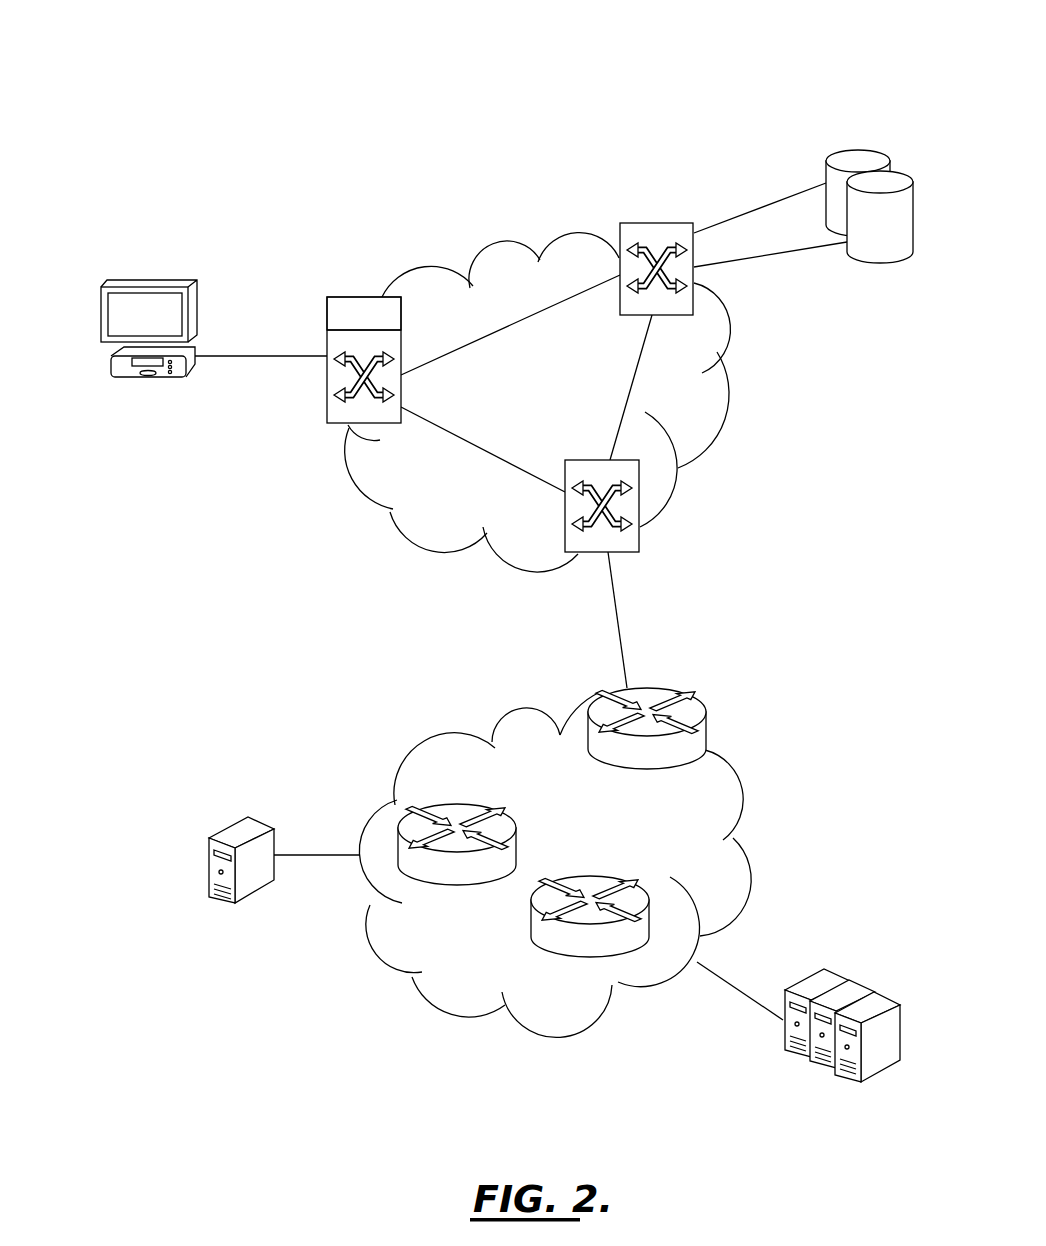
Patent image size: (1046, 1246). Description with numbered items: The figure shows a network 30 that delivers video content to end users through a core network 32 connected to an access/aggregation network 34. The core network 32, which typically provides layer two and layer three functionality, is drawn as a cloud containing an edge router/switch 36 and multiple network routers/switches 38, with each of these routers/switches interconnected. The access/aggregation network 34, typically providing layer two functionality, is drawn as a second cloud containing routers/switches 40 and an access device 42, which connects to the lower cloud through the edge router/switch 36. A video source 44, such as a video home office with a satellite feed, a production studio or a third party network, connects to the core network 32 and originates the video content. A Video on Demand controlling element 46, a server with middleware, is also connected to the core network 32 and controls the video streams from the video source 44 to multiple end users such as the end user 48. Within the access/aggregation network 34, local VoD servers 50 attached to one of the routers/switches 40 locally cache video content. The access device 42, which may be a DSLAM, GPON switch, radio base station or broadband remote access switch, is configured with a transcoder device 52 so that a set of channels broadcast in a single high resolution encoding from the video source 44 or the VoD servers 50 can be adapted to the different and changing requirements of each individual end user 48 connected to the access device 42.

The network 30 is at (577, 60).
The core network 32 is at (738, 777).
The access/aggregation network 34 is at (508, 240).
The edge router/switch 36 is at (697, 693).
The network routers/switches 38 is at (523, 842).
The routers/switches 40 is at (653, 222).
The access device 42 is at (327, 410).
The video source 44 is at (860, 985).
The VoD controlling element 46 is at (255, 818).
The end user 48 is at (133, 377).
The local VoD servers 50 is at (858, 150).
The transcoder device 52 is at (360, 295).